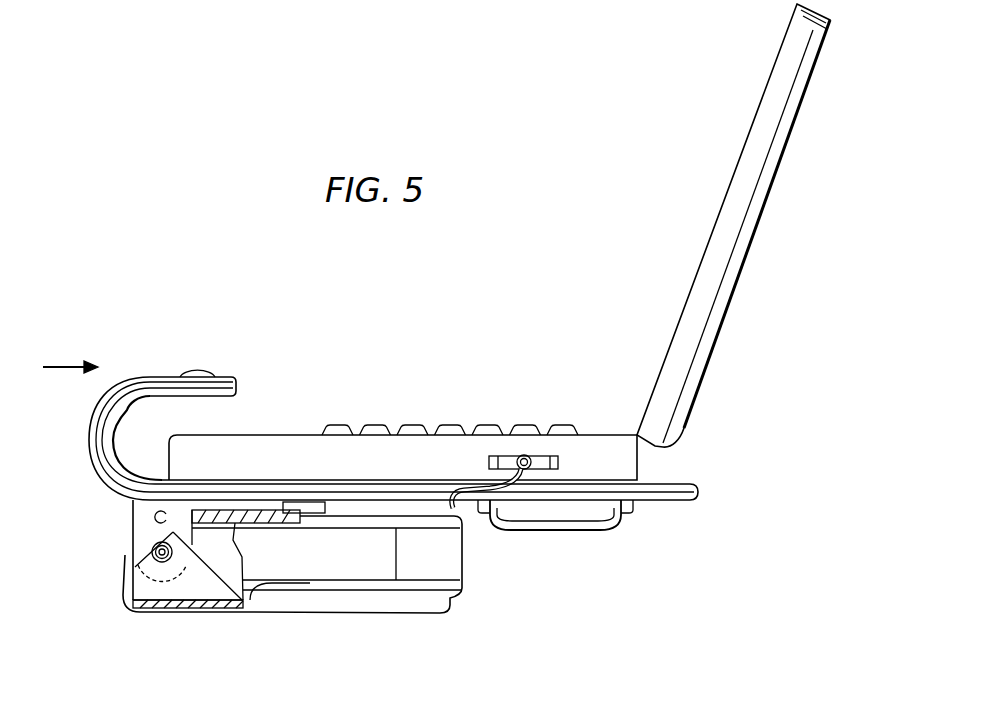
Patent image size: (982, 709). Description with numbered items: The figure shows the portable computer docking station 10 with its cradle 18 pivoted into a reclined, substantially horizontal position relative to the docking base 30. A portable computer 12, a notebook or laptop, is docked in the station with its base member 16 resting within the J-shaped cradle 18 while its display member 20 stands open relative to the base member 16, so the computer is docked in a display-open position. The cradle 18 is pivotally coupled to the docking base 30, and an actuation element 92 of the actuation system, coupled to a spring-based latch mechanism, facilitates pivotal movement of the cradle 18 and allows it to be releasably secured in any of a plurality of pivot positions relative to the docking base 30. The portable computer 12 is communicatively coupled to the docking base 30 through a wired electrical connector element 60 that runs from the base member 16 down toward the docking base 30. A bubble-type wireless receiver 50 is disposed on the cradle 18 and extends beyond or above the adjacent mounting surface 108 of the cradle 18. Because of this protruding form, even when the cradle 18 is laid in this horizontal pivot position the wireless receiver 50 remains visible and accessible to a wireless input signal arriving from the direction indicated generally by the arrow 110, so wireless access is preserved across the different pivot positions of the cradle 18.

The portable computer docking station 10 is at (402, 262).
The portable computer 12 is at (748, 110).
The base member 16 is at (277, 434).
The cradle 18 is at (667, 504).
The display member 20 is at (718, 228).
The docking base 30 is at (462, 552).
The wireless receiver 50 is at (197, 369).
The wired electrical connector element 60 is at (560, 462).
The actuation element 92 is at (574, 531).
The mounting surface 108 is at (152, 376).
The direction of wireless input signal 110 is at (62, 365).